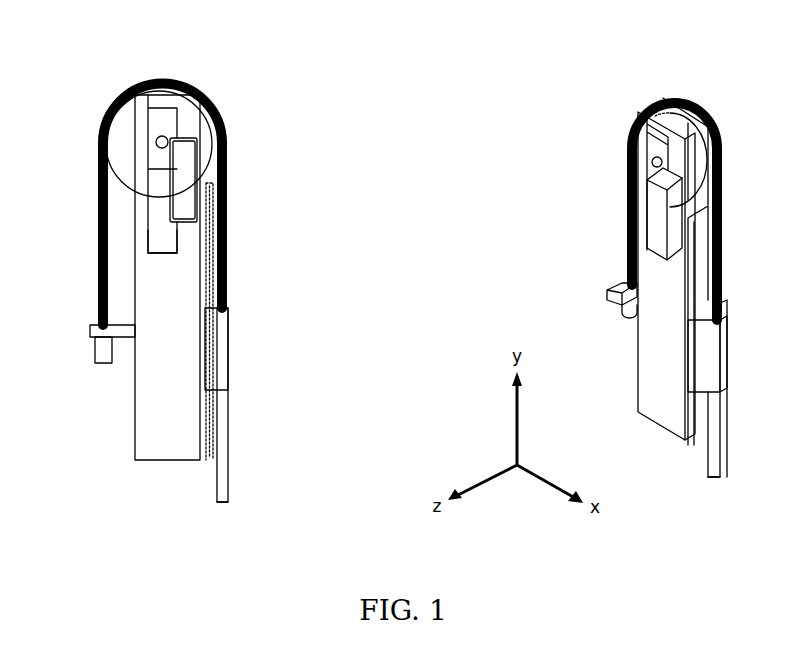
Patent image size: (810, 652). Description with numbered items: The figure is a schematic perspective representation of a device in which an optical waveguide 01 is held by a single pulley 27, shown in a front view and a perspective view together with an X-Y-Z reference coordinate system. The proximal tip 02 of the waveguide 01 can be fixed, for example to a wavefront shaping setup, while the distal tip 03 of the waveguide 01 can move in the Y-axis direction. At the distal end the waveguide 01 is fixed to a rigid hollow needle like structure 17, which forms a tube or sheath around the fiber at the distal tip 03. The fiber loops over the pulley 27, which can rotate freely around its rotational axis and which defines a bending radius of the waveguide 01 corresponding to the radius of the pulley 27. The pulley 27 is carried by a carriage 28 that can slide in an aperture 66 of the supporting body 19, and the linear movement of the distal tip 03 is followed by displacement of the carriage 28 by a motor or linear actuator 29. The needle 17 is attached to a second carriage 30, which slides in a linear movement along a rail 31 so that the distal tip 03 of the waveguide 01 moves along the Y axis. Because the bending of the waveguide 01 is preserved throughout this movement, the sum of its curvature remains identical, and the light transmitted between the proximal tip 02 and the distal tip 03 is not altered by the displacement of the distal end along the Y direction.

The optical waveguide 01 is at (232, 163).
The proximal tip 02 is at (100, 363).
The distal tip 03 is at (223, 503).
The needle like structure 17 is at (233, 410).
The main body 19 is at (148, 467).
The pulley 27 is at (123, 146).
The carriage 28 is at (158, 123).
The motor or linear actuator 29 is at (200, 148).
The carriage 30 is at (213, 348).
The rail 31 is at (213, 245).
The aperture 66 is at (153, 238).